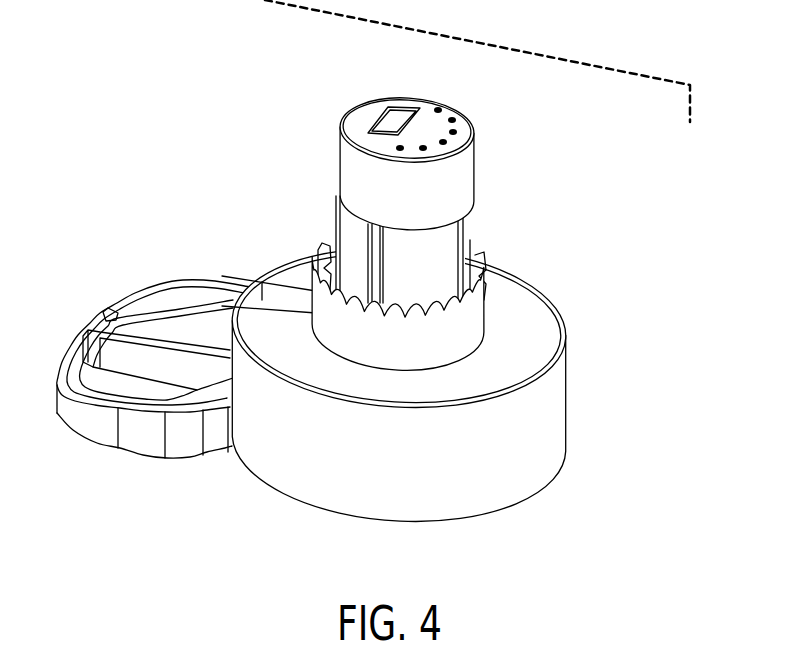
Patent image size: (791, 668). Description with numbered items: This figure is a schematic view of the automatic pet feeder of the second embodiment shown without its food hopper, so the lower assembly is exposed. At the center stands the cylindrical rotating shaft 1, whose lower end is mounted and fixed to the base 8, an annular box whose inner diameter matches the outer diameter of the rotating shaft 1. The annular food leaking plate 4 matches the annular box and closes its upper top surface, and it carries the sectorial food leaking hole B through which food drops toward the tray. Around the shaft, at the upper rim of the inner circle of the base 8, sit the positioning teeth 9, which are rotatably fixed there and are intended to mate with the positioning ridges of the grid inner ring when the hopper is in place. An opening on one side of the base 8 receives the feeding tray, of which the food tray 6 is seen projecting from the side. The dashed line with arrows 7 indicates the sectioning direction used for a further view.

The rotating shaft 1 is at (445, 242).
The food leaking plate 4 is at (536, 330).
The food tray 6 is at (135, 292).
The section line VII-VII 7 is at (395, 101).
The base 8 is at (545, 458).
The positioning teeth 9 is at (472, 298).
The sectorial food leaking hole B is at (292, 290).